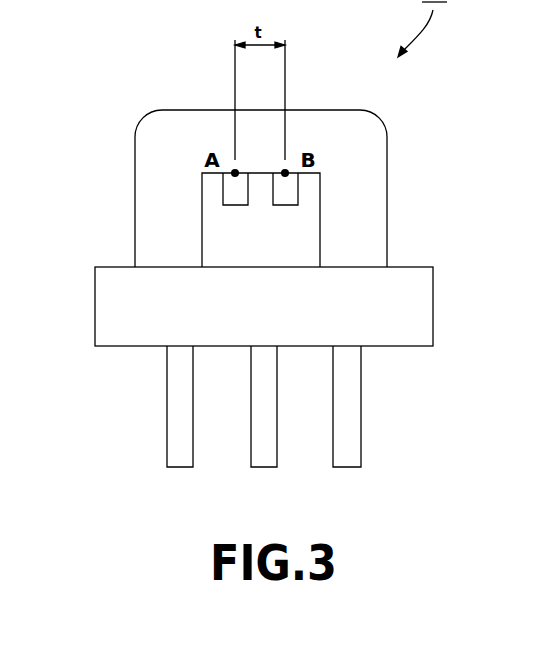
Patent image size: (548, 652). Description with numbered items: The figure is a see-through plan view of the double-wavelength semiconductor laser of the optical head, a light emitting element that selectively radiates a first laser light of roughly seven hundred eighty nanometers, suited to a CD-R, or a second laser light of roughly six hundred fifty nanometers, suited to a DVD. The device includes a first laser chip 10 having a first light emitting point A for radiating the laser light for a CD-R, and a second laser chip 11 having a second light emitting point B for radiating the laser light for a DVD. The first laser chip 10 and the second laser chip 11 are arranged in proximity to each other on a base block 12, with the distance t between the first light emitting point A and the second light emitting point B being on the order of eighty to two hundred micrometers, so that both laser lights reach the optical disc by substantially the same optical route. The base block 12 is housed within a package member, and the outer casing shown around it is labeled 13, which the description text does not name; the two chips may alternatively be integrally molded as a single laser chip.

The first laser chip 10 is at (235, 192).
The second laser chip 11 is at (287, 192).
The base block 12 is at (202, 245).
The cap 13 is at (387, 240).